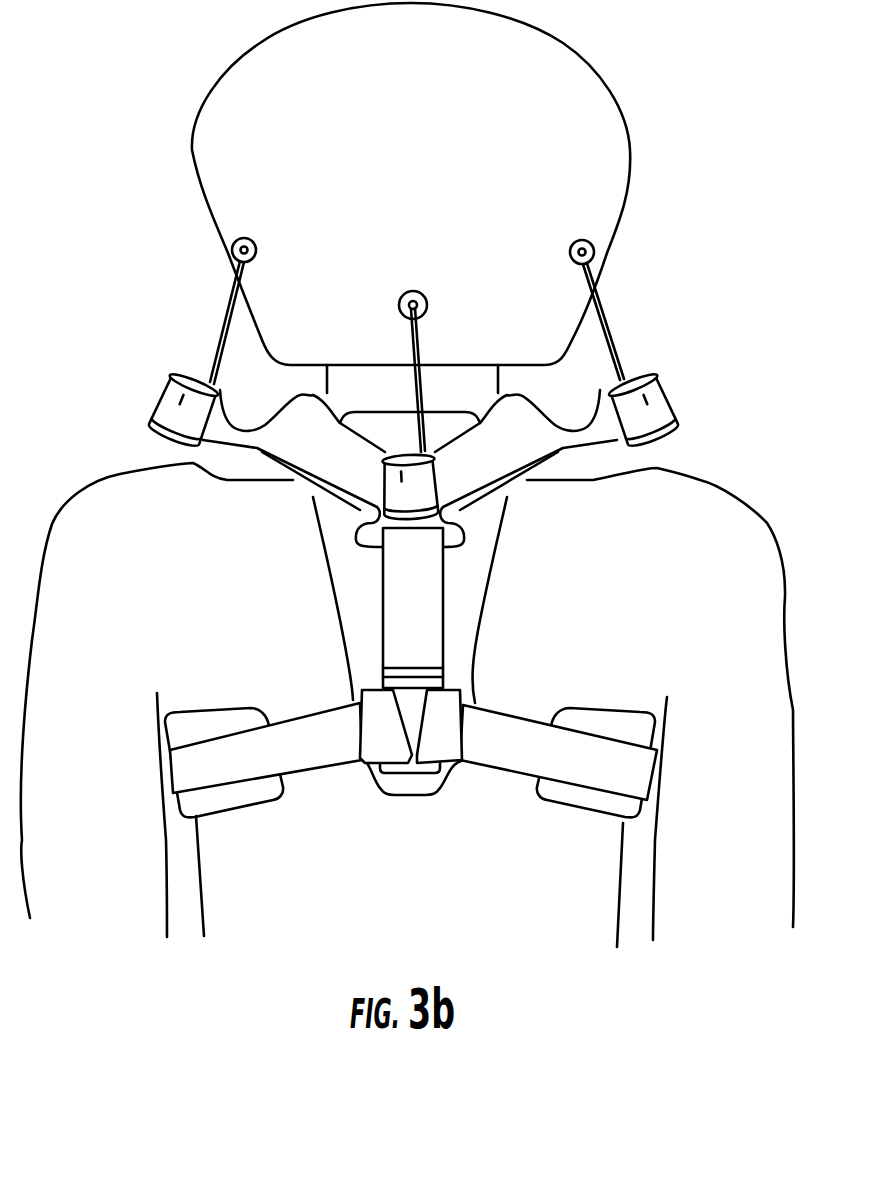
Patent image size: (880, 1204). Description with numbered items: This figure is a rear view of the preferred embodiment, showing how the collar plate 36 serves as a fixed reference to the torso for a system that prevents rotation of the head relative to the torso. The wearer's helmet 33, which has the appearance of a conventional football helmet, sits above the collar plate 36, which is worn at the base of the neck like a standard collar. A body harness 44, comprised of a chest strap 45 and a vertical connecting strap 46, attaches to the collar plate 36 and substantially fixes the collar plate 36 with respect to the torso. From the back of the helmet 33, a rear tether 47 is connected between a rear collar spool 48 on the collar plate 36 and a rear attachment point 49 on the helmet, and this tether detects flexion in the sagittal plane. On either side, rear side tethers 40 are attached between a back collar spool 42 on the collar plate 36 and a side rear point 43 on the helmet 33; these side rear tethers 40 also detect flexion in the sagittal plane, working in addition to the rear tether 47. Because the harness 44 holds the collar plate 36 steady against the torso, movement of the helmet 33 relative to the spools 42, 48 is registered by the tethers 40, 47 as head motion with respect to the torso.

The helmet 33 is at (459, 240).
The collar plate 36 is at (528, 420).
The side rear tether 40 is at (218, 332).
The rear collar spool 42 is at (178, 405).
The side rear point 43 is at (232, 249).
The body harness 44 is at (240, 624).
The chest strap 45 is at (293, 765).
The vertical connecting strap 46 is at (426, 608).
The rear tether 47 is at (412, 375).
The rear collar spool 48 is at (400, 488).
The rear attachment point 49 is at (402, 298).